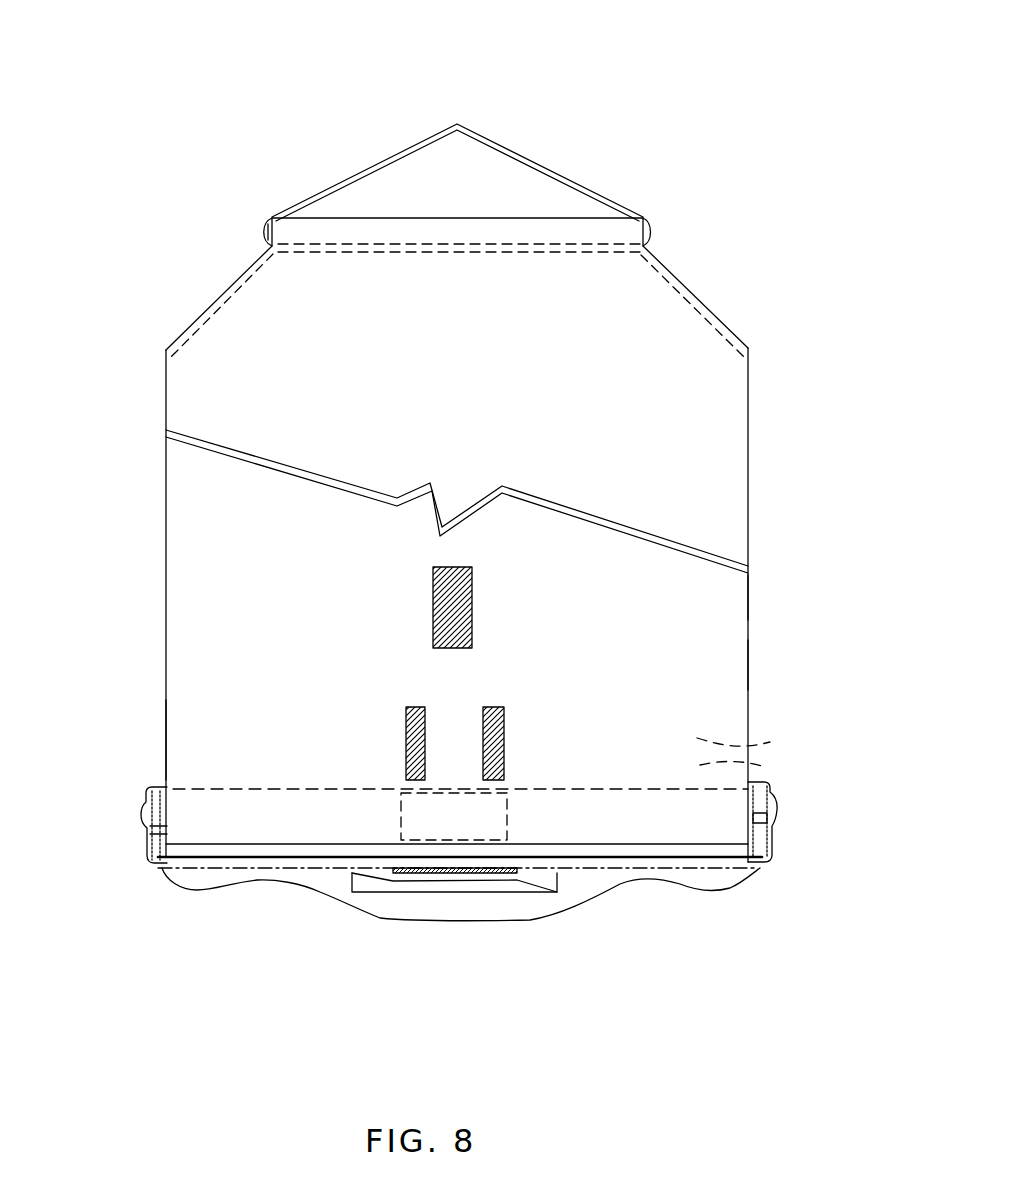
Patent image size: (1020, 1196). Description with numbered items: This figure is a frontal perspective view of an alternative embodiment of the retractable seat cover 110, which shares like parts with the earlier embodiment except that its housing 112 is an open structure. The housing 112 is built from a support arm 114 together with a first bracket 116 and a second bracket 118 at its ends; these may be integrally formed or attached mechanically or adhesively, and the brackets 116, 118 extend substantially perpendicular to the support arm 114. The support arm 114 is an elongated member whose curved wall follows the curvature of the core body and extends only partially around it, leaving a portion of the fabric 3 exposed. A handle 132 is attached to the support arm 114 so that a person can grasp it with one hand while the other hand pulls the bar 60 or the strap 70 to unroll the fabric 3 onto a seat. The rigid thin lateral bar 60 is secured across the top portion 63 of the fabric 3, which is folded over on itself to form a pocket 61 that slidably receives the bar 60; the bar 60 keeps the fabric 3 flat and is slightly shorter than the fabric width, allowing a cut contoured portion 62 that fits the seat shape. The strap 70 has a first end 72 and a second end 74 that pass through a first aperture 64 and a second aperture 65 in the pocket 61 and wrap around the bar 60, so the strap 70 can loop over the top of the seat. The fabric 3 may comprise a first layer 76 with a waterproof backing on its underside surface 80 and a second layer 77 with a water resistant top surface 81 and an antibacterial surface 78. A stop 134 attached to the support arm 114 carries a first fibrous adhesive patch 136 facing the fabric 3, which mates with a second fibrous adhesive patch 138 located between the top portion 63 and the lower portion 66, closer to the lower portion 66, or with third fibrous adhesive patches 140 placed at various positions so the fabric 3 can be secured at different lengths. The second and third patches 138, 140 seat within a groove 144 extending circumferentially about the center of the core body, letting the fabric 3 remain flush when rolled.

The retractable seat cover 110 is at (226, 97).
The strap 70 is at (530, 160).
The pocket 61 is at (573, 235).
The first end 72 is at (273, 212).
The second end 74 is at (647, 217).
The first aperture 64 is at (265, 227).
The second aperture 65 is at (653, 232).
The bar 60 is at (290, 238).
The contoured portion 62 is at (700, 300).
The top portion 63 is at (220, 388).
The fabric 3 is at (720, 466).
The top surface 81 is at (225, 603).
The second fibrous adhesive patch 138 is at (445, 593).
The antibacterial surface 78 is at (730, 608).
The second layer 77 is at (727, 672).
The third fibrous adhesive patch 140 is at (408, 737).
The lower portion 66 is at (200, 730).
The first layer 76 is at (770, 742).
The underside surface 80 is at (765, 767).
The first bracket 116 is at (152, 856).
The second bracket 118 is at (775, 858).
The groove 144 is at (418, 820).
The housing 112 is at (637, 880).
The support arm 114 is at (227, 886).
The handle 132 is at (374, 918).
The stop 134 is at (505, 883).
The first fibrous adhesive patch 136 is at (458, 863).